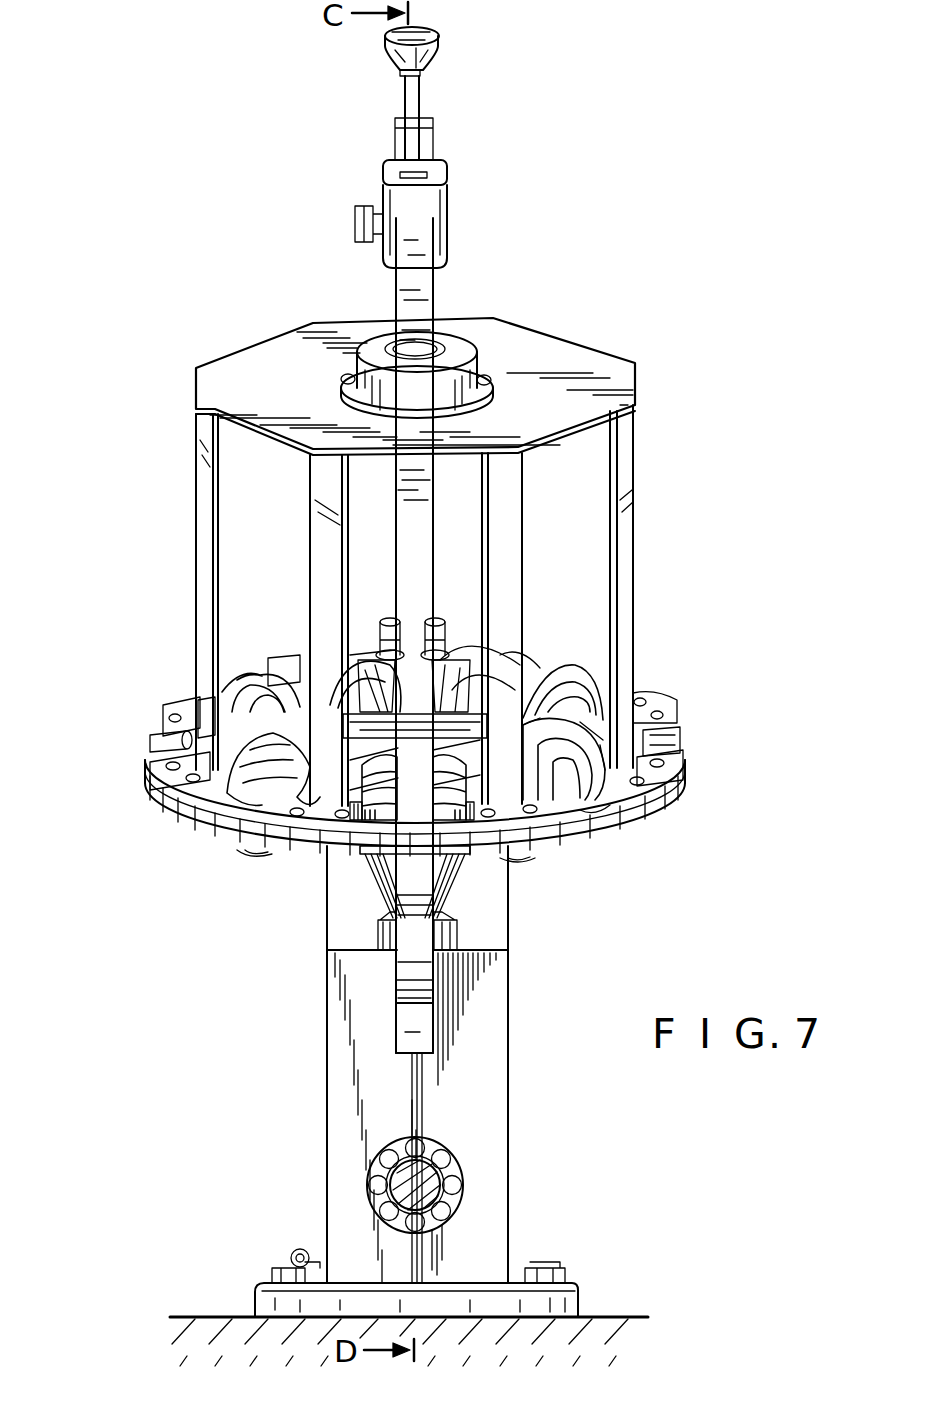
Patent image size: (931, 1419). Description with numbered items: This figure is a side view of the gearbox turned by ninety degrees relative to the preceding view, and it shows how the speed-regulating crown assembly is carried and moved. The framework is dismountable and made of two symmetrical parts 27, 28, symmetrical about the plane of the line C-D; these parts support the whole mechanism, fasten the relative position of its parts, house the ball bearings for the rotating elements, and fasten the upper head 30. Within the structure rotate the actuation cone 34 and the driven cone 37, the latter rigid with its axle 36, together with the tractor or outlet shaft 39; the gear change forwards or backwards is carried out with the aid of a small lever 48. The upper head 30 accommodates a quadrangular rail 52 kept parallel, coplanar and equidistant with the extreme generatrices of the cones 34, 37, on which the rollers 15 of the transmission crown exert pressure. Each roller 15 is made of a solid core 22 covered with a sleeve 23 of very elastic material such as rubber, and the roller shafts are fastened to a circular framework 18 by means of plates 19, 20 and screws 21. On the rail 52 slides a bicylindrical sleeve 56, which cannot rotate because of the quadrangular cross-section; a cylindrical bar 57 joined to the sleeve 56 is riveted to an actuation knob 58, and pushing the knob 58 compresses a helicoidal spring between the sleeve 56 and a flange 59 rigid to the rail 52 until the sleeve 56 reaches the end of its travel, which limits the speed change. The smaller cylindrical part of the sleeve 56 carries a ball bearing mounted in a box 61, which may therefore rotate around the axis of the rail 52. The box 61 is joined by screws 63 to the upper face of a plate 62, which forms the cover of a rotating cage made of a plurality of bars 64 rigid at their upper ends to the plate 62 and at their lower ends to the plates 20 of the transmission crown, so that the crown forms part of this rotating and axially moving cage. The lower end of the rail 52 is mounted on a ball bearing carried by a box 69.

The rollers 15 is at (605, 668).
The circular framework 18 is at (235, 832).
The plates 19 is at (190, 812).
The plates 20 is at (165, 790).
The screws 21 is at (155, 715).
The solid core 22 is at (190, 720).
The sleeve 23 is at (215, 740).
The framework part 27 is at (262, 1290).
The framework part 28 is at (482, 1065).
The upper head 30 is at (420, 282).
The actuation cone 34 is at (462, 660).
The axle 36 is at (385, 935).
The driven cone 37 is at (350, 746).
The tractor or outlet shaft 39 is at (464, 1170).
The small lever 48 is at (300, 1248).
The quadrangular rail 52 is at (440, 178).
The sleeve 56 is at (398, 348).
The cylindrical bar 57 is at (418, 98).
The knob 58 is at (430, 60).
The flange 59 is at (392, 622).
The box 61 is at (372, 353).
The plate 62 is at (568, 350).
The screws 63 is at (340, 378).
The bars 64 is at (204, 527).
The box 69 is at (382, 652).